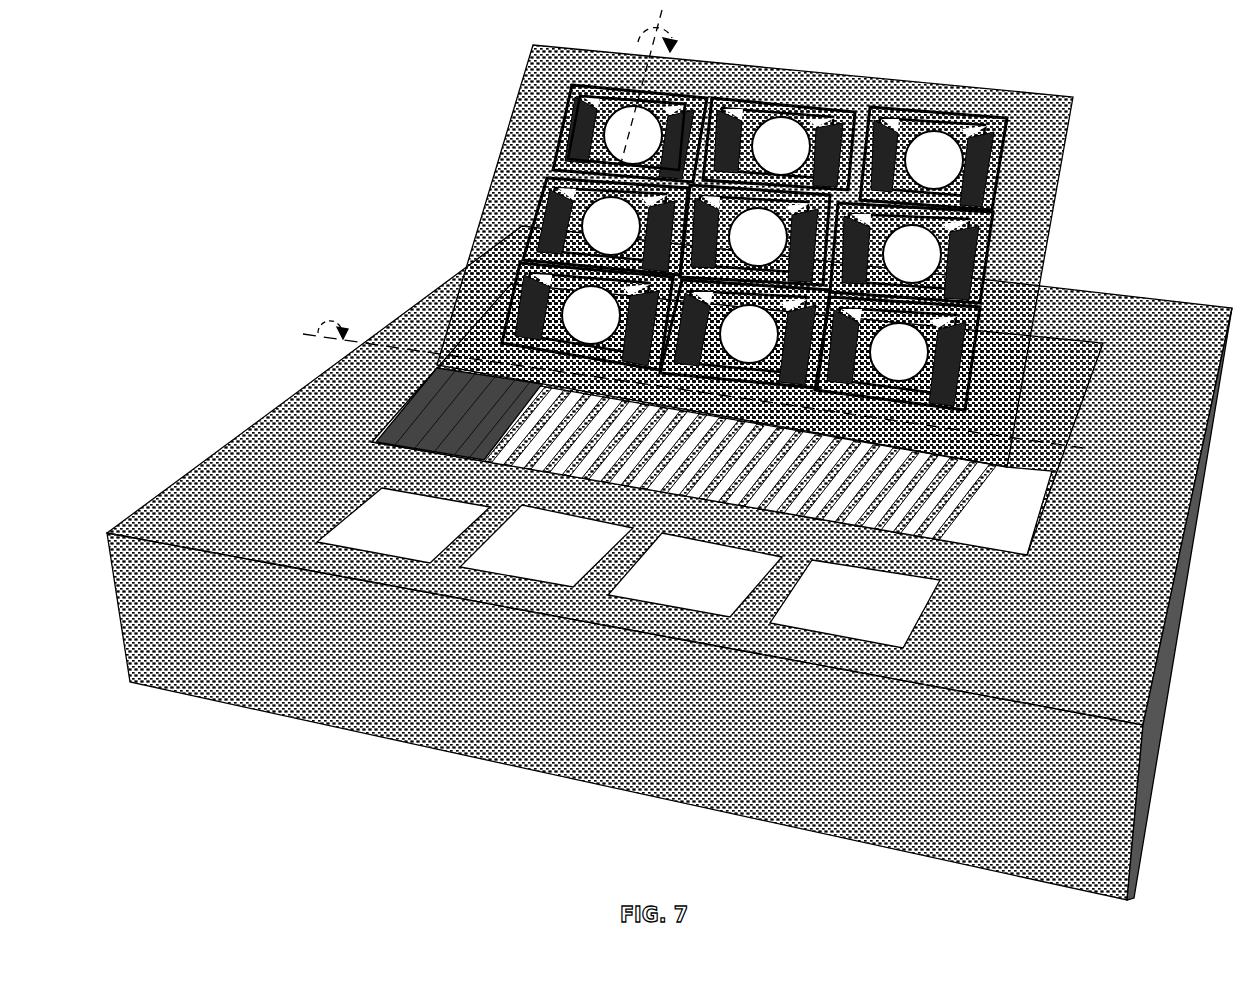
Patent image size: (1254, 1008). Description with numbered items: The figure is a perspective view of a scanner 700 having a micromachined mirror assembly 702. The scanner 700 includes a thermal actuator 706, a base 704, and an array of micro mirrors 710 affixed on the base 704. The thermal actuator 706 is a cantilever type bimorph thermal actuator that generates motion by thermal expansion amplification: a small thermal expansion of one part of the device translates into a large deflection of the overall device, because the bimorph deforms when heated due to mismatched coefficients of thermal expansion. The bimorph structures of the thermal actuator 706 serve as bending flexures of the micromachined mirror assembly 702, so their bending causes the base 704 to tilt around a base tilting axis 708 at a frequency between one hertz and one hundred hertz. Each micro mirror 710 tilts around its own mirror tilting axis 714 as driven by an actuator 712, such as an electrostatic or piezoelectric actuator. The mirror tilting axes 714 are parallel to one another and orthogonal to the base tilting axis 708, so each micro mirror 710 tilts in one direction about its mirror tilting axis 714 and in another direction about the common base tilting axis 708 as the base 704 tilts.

The scanner 700 is at (669, 450).
The micromachined mirror assembly 702 is at (669, 455).
The base 704 is at (755, 234).
The thermal actuator 706 is at (398, 384).
The base tilting axis 708 is at (320, 332).
The micro mirror 710 is at (623, 137).
The actuator 712 is at (681, 97).
The mirror tilting axis 714 is at (643, 75).